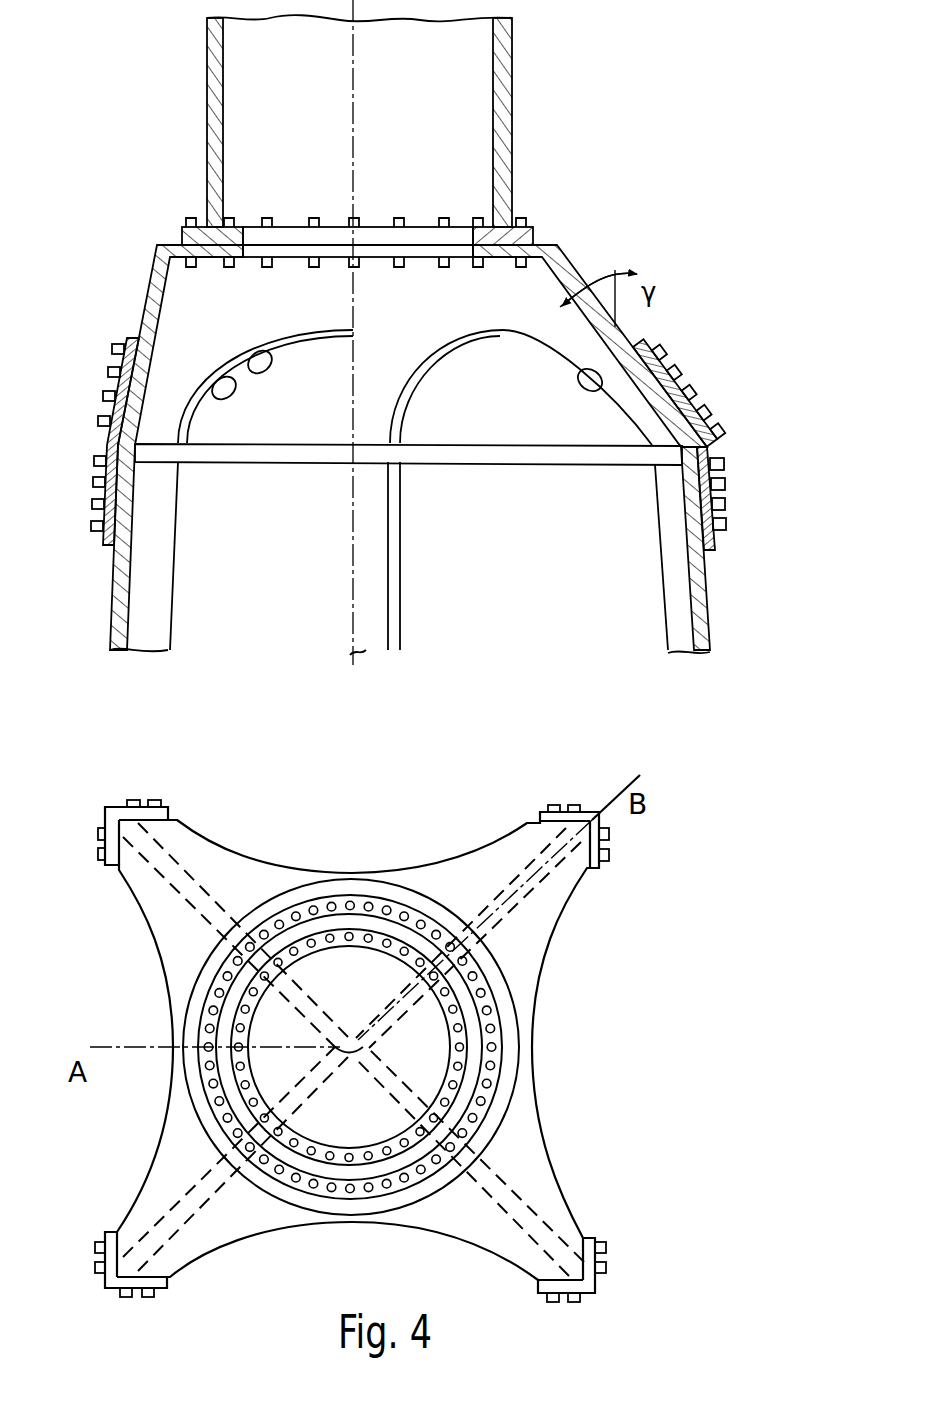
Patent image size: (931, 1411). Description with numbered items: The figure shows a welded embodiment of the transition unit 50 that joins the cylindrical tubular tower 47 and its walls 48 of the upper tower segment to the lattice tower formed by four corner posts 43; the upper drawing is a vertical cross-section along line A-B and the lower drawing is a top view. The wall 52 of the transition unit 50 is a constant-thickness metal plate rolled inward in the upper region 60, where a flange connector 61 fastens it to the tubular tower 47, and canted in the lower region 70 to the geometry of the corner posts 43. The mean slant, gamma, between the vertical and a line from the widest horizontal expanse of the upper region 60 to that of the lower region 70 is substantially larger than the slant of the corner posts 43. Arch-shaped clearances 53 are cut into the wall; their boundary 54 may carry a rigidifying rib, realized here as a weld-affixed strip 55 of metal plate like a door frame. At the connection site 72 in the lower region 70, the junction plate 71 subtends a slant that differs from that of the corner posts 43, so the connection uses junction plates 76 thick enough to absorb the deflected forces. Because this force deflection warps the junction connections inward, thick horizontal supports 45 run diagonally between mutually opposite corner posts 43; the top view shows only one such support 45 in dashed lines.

The corner post 43 is at (143, 583).
The horizontal support 45 is at (294, 450).
The tubular tower 47 is at (478, 110).
The wall 48 is at (190, 104).
The transition unit 50 is at (528, 285).
The wall 52 is at (152, 278).
The arch-shaped clearance 53 is at (214, 388).
The boundary of the arch-shaped clearance 54 is at (250, 362).
The weld-affixed strip 55 is at (316, 340).
The upper region 60 is at (562, 233).
The flange connector 61 is at (548, 238).
The lower region 70 is at (726, 451).
The junction plate 71 is at (708, 444).
The connection site 72 is at (683, 397).
The junction plate 76 is at (716, 546).